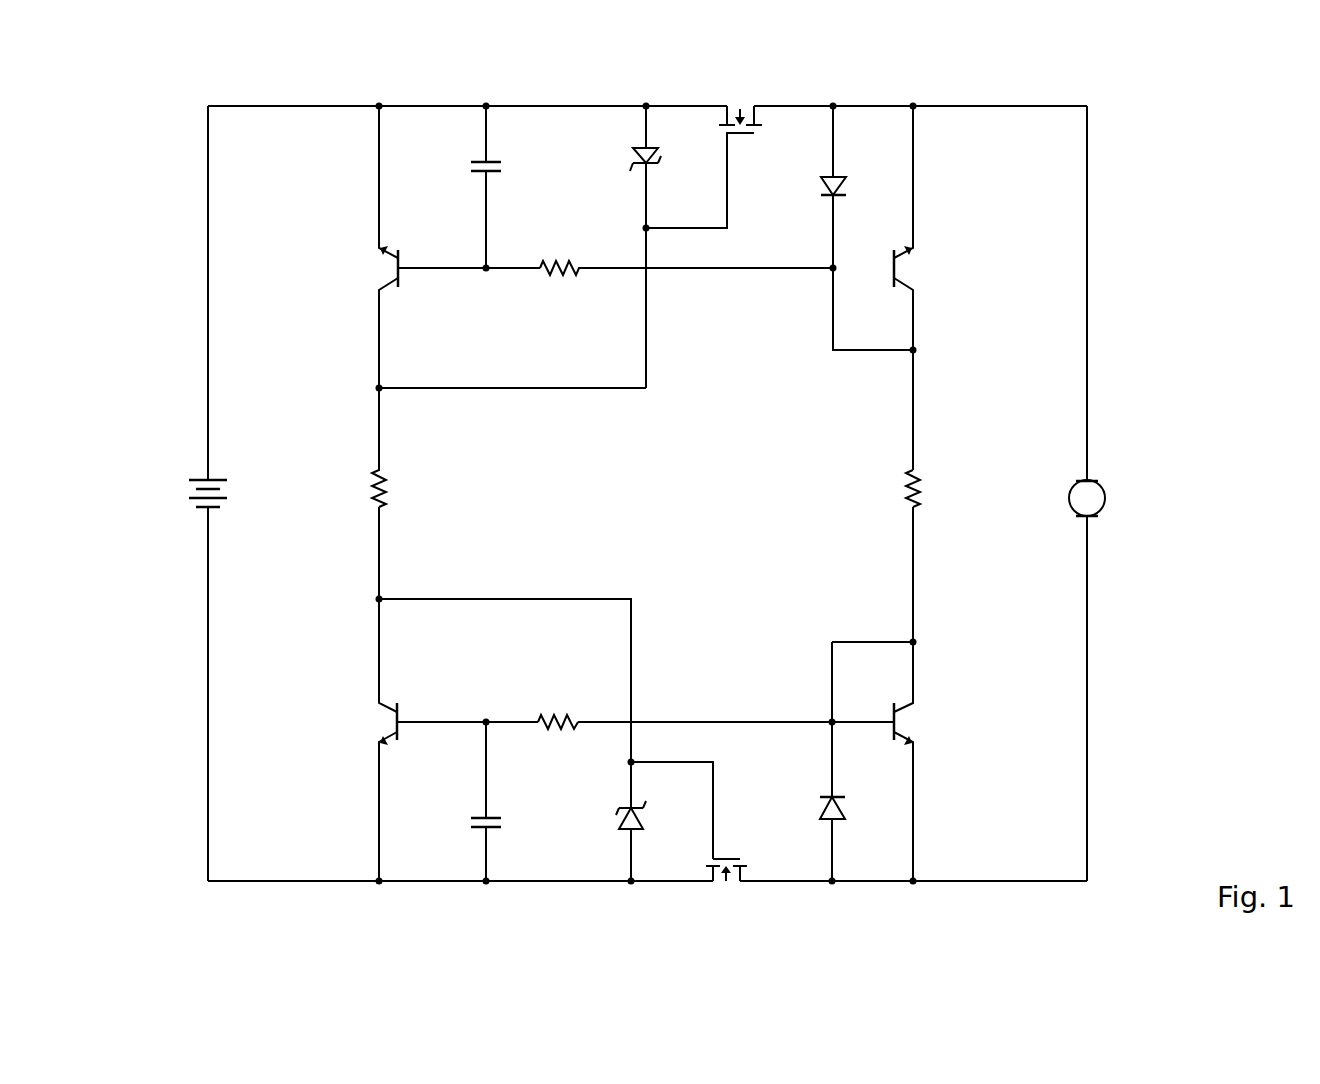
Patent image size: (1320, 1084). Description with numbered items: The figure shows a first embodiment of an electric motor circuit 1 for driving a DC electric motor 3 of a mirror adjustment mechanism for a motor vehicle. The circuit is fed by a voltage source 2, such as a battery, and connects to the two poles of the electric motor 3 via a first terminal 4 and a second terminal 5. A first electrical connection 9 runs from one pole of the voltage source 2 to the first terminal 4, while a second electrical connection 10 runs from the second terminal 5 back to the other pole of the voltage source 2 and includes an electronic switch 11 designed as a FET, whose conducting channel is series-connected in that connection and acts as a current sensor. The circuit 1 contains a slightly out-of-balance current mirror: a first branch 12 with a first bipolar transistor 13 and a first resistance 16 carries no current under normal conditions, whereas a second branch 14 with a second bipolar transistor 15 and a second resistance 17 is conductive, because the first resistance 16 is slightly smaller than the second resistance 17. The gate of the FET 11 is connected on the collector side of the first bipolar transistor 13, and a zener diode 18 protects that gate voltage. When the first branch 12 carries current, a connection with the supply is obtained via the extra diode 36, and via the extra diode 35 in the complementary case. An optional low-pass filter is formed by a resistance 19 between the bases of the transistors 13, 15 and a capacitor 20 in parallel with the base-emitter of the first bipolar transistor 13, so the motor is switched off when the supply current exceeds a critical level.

The electric motor circuit 1 is at (1156, 337).
The voltage source 2 is at (176, 473).
The electric motor 3 is at (1108, 490).
The first terminal 4 is at (834, 106).
The second terminal 5 is at (914, 882).
The first electrical connection 9 is at (1087, 212).
The second electrical connection 10 is at (1087, 722).
The electronic switch 11 is at (748, 853).
The first branch 12 is at (379, 548).
The first bipolar transistor 13 is at (372, 716).
The second branch 14 is at (913, 576).
The second bipolar transistor 15 is at (926, 712).
The first resistance 16 is at (371, 470).
The second resistance 17 is at (928, 469).
The zener diode 18 is at (606, 811).
The resistance 19 is at (534, 705).
The capacitor 20 is at (463, 812).
The extra diode 35 is at (810, 800).
The extra diode 36 is at (812, 205).